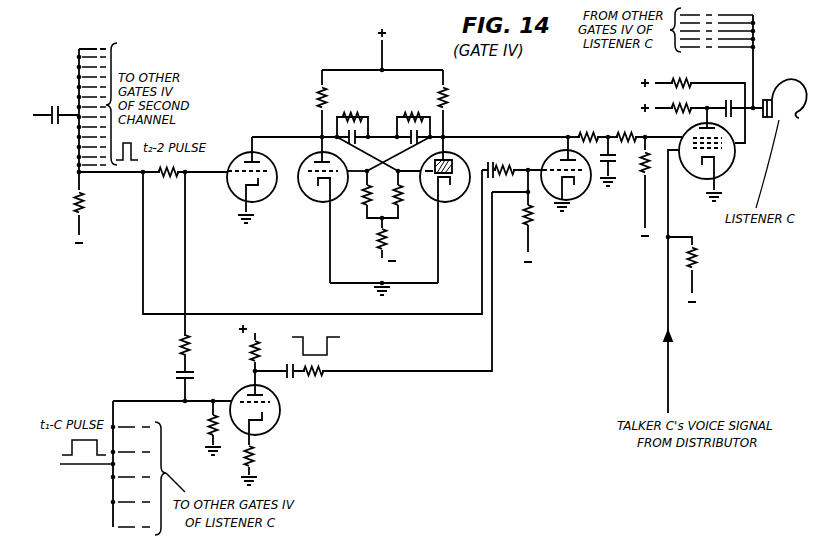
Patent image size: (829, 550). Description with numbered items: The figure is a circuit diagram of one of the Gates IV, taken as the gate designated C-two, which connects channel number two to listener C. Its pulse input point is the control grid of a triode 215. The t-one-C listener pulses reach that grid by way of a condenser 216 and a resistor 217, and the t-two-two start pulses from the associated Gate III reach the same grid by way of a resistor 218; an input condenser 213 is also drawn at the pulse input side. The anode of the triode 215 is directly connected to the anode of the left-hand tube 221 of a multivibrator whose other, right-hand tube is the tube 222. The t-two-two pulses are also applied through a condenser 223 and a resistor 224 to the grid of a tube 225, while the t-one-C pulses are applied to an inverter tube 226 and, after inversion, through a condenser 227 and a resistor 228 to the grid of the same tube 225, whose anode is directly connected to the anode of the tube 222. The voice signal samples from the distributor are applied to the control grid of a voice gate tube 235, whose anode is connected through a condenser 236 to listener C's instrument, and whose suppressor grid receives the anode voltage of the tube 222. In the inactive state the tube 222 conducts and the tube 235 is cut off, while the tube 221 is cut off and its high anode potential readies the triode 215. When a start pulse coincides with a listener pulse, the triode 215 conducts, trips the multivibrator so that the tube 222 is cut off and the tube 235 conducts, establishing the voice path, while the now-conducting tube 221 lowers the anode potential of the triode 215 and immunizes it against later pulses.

The input coupling capacitor 213 is at (55, 106).
The triode 215 is at (230, 192).
The condenser 216 is at (176, 376).
The resistor 217 is at (180, 345).
The resistor 218 is at (166, 188).
The tube of multivibrator 221 is at (307, 194).
The tube of multivibrator 222 is at (452, 201).
The condenser 223 is at (489, 160).
The resistor 224 is at (511, 165).
The tube 225 is at (578, 198).
The inverter tube 226 is at (279, 420).
The condenser 227 is at (289, 380).
The resistor 228 is at (322, 374).
The voice gate tube 235 is at (691, 180).
The condenser 236 is at (727, 98).